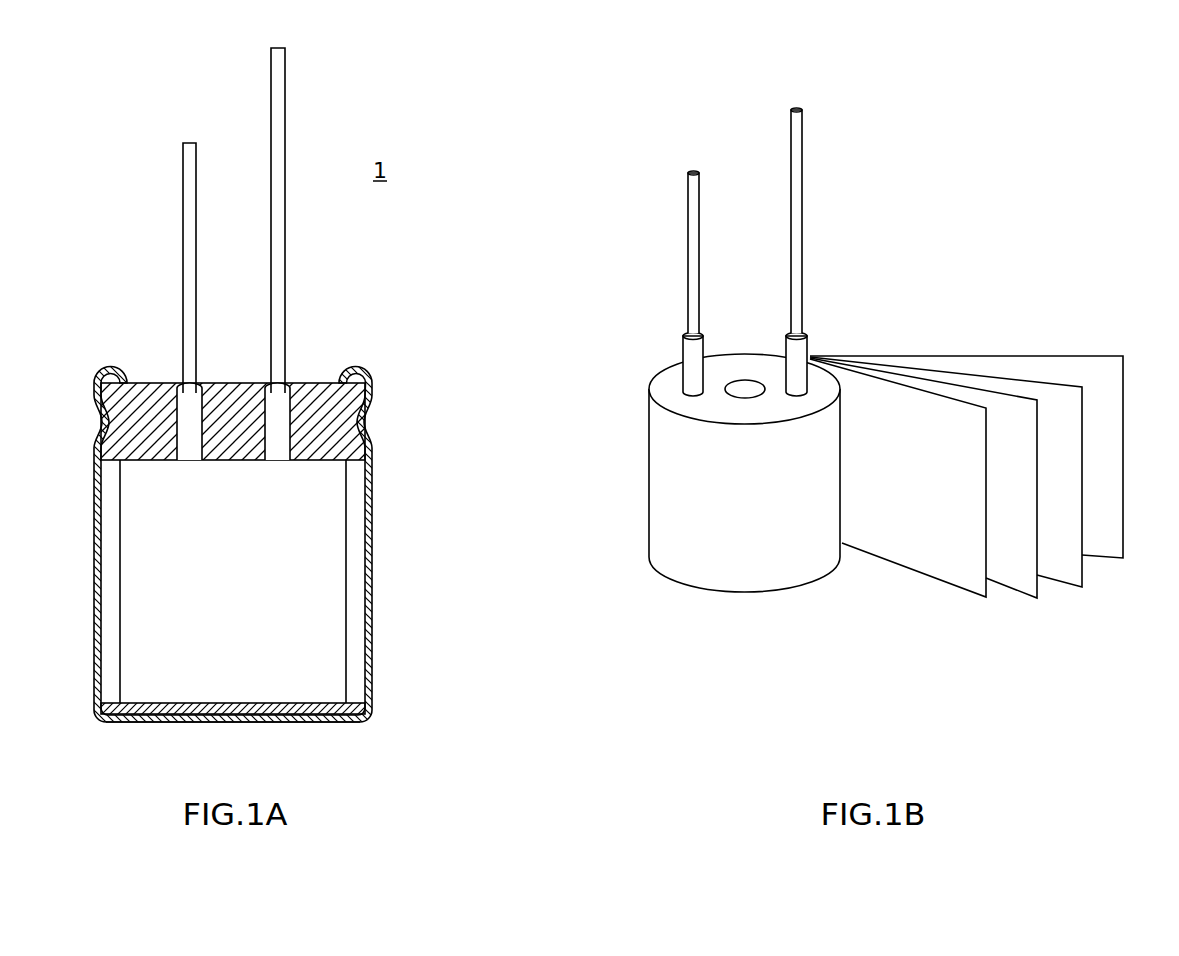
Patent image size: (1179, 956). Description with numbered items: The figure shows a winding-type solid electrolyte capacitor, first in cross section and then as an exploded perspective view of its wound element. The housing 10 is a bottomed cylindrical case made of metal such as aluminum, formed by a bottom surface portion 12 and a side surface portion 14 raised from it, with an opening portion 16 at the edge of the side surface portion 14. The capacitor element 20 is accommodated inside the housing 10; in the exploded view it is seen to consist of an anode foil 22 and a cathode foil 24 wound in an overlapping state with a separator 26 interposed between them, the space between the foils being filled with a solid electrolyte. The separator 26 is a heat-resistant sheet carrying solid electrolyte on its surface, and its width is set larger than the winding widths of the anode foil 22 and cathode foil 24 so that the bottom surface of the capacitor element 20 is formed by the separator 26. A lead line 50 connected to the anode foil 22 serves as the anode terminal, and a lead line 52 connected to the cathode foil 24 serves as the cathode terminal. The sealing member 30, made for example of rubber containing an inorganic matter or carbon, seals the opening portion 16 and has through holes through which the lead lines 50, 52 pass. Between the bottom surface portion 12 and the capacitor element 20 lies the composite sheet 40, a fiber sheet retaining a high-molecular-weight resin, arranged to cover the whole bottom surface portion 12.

In FIG. 1A, the housing 10 is at (380, 378).
In FIG. 1A, the bottom surface portion 12 is at (237, 723).
In FIG. 1A, the side surface portion 14 is at (372, 602).
In FIG. 1A, the opening portion 16 is at (352, 338).
In FIG. 1A, the capacitor element 20 is at (333, 540).
In FIG. 1B, the capacitor element 20 is at (642, 475).
In FIG. 1B, the anode foil 22 is at (955, 573).
In FIG. 1B, the cathode foil 24 is at (1062, 573).
In FIG. 1B, the separator 26 is at (1108, 547).
In FIG. 1A, the sealing member 30 is at (347, 418).
In FIG. 1A, the composite sheet 40 is at (367, 717).
In FIG. 1A, the lead line 50 is at (277, 235).
In FIG. 1B, the lead line 50 is at (795, 255).
In FIG. 1A, the lead line 52 is at (190, 237).
In FIG. 1B, the lead line 52 is at (692, 258).